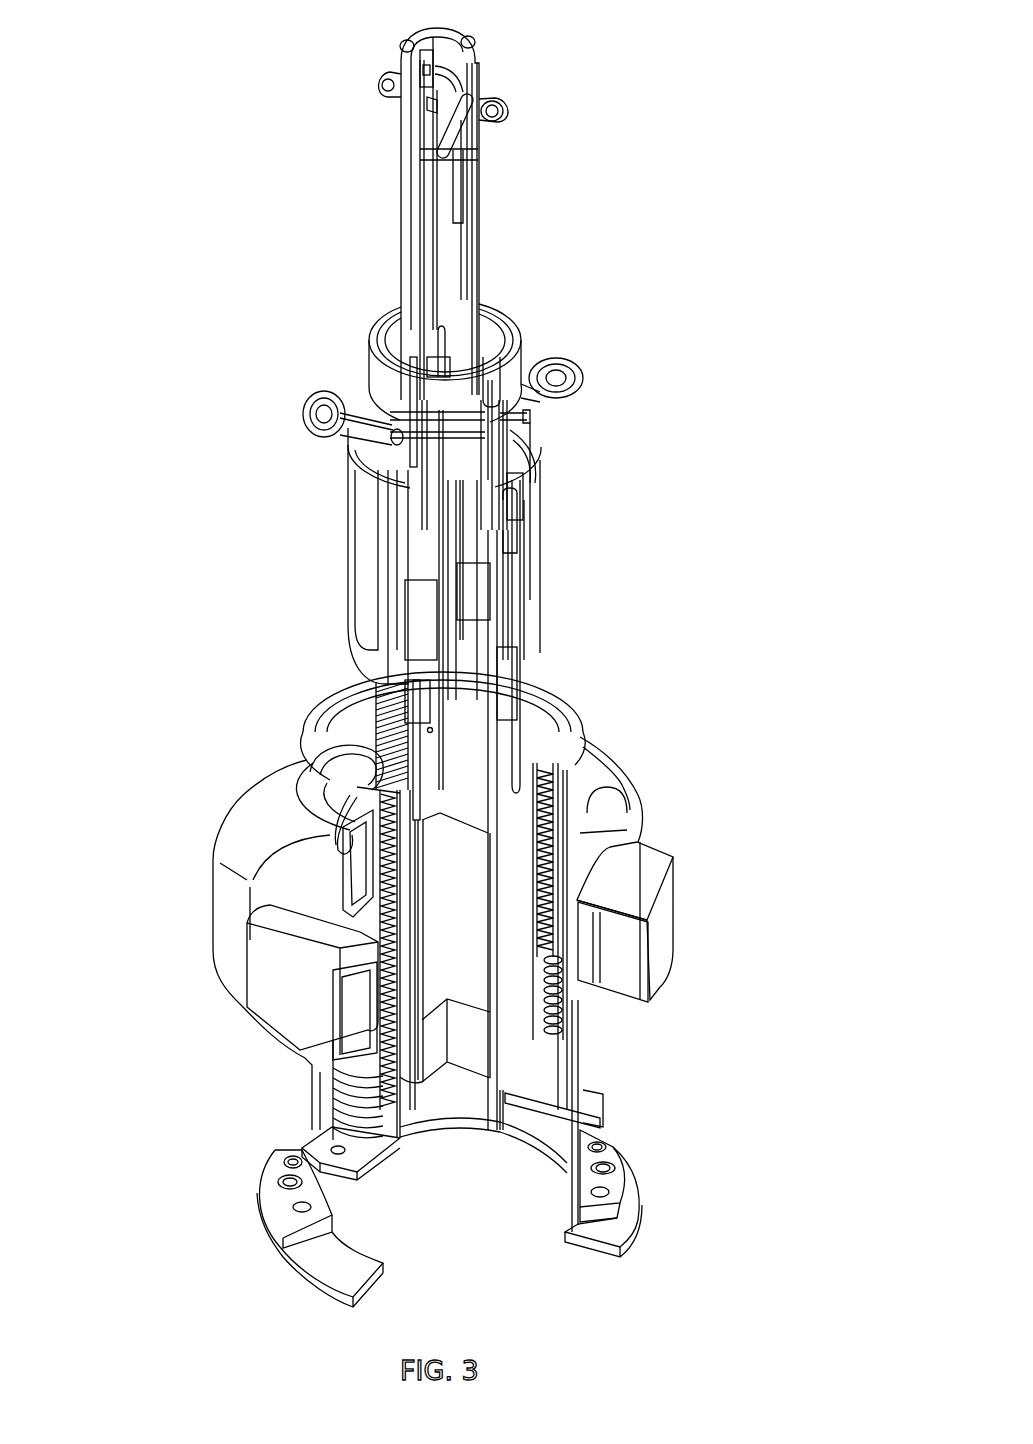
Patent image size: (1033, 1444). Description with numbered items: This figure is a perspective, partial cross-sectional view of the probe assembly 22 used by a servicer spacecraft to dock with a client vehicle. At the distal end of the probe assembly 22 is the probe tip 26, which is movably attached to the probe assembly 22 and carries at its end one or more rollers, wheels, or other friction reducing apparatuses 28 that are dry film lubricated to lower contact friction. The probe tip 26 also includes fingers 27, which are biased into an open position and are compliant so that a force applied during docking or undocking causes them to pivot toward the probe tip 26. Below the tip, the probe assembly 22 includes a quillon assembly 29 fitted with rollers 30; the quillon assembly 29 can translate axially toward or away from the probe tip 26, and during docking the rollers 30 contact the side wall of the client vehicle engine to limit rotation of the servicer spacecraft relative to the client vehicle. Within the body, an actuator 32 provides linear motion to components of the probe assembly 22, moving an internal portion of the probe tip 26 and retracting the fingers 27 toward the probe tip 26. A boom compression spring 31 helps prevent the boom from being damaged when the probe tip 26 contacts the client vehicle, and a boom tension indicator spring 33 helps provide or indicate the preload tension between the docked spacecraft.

The probe assembly 22 is at (293, 628).
The probe tip 26 is at (245, 189).
The fingers 27 is at (378, 80).
The friction reducing apparatuses 28 is at (395, 43).
The quillon assembly 29 is at (313, 365).
The rollers 30 is at (298, 437).
The boom compression spring 31 is at (556, 843).
The actuator 32 is at (501, 945).
The boom tension indicator spring 33 is at (584, 1067).